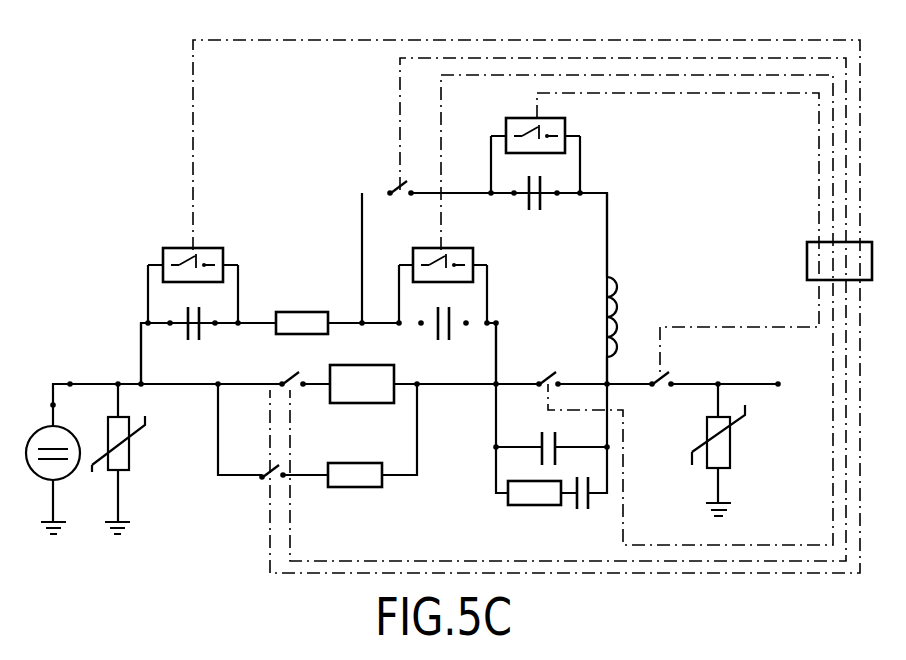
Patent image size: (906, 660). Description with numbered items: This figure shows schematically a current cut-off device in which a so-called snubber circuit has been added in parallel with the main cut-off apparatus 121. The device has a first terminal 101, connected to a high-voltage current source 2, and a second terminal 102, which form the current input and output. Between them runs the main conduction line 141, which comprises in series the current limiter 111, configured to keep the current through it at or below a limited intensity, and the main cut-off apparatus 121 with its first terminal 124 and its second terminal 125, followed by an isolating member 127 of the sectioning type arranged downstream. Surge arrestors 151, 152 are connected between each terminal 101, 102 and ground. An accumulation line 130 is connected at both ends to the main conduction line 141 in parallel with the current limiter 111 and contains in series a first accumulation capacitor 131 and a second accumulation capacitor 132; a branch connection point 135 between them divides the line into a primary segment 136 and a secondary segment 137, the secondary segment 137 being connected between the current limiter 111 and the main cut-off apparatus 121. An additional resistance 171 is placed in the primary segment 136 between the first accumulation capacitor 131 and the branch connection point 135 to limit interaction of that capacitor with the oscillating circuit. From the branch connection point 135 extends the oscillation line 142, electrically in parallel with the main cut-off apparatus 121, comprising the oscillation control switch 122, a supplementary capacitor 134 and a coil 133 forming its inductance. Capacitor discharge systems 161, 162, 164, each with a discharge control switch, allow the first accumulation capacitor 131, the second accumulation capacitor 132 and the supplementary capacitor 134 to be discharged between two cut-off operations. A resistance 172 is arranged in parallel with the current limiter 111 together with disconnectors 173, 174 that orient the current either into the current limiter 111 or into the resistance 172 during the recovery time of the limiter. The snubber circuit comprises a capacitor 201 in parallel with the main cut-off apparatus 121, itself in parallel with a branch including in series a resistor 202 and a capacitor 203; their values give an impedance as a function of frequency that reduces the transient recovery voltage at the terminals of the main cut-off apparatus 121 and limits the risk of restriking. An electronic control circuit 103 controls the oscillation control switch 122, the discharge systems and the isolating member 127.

The high-voltage current source 2 is at (40, 480).
The first terminal 101 is at (70, 381).
The second terminal 102 is at (778, 381).
The electronic control circuit 103 is at (859, 273).
The current limiter 111 is at (380, 397).
The main cut-off apparatus 121 is at (557, 370).
The oscillation control switch 122 is at (391, 186).
The first terminal of the main cut-off apparatus 124 is at (499, 382).
The second terminal of the main cut-off apparatus 125 is at (602, 381).
The isolating member 127 is at (665, 375).
The accumulation line 130 is at (138, 364).
The first accumulation capacitor 131 is at (201, 333).
The second accumulation capacitor 132 is at (451, 333).
The coil 133 is at (617, 290).
The supplementary capacitor 134 is at (542, 212).
The branch connection point 135 is at (364, 326).
The primary segment 136 is at (262, 326).
The secondary segment 137 is at (498, 334).
The main conduction line 141 is at (447, 389).
The oscillation line 142 is at (612, 229).
The surge arrestor 151 is at (126, 461).
The surge arrestor 152 is at (728, 461).
The capacitor discharge system 161 is at (169, 249).
The capacitor discharge system 162 is at (420, 249).
The capacitor discharge system 164 is at (515, 119).
The additional resistance 171 is at (304, 312).
The resistance 172 is at (352, 487).
The disconnector 173 is at (290, 388).
The disconnector 174 is at (262, 472).
The capacitor 201 is at (541, 446).
The resistor 202 is at (532, 506).
The capacitor 203 is at (576, 510).